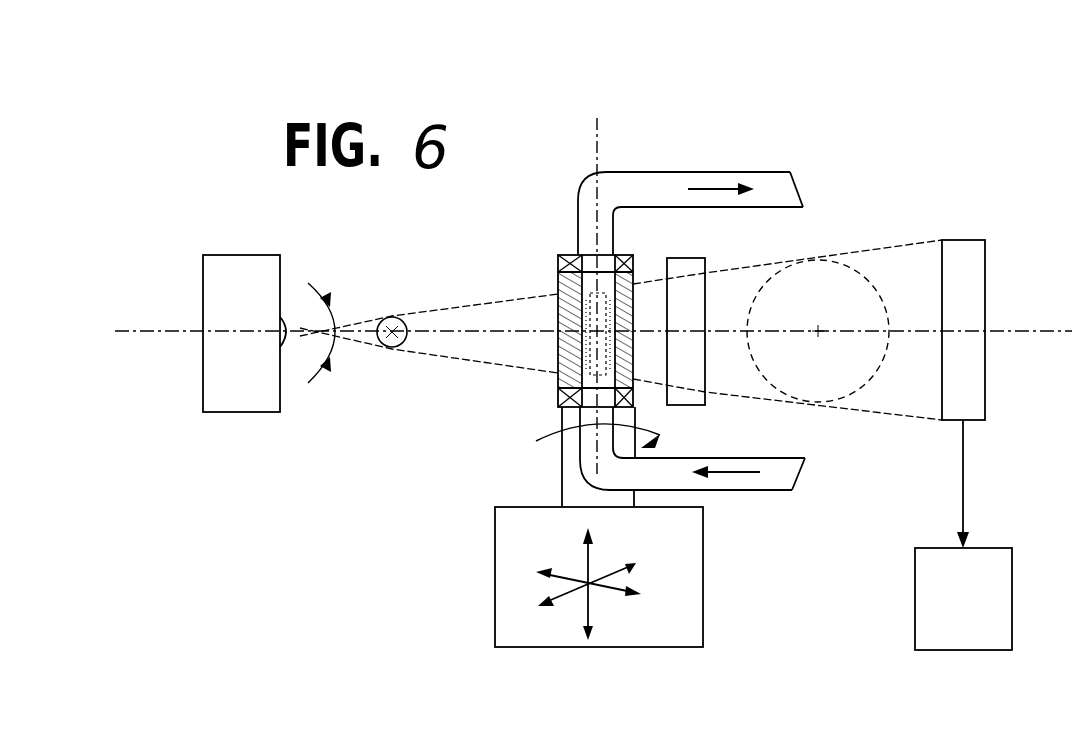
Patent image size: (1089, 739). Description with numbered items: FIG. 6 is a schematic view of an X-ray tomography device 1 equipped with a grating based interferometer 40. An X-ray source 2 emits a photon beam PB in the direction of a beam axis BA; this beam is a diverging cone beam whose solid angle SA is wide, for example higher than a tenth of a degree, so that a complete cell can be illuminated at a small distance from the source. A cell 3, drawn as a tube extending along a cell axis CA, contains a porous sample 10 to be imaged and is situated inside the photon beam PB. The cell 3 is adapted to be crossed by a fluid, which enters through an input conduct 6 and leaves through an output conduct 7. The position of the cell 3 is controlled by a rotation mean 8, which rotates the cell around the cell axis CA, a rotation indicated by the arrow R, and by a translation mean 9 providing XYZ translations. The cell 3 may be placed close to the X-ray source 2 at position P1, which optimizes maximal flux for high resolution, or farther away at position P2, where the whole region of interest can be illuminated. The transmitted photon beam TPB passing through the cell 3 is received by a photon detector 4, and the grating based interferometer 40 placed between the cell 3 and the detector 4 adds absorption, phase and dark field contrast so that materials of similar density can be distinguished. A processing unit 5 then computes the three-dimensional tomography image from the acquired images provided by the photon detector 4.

The X-ray tomography device 1 is at (892, 96).
The X-ray source 2 is at (223, 255).
The cell 3 is at (524, 276).
The photon detector 4 is at (975, 240).
The processing unit 5 is at (1012, 562).
The input conduct 6 is at (762, 490).
The output conduct 7 is at (736, 172).
The rotation mean 8 is at (560, 483).
The translation mean 9 is at (494, 530).
The porous sample 10 is at (612, 307).
The grating based interferometer 40 is at (714, 252).
The cell axis CA is at (594, 134).
The photon beam PB is at (444, 305).
The solid angle SA is at (315, 351).
The position P1 is at (390, 356).
The second point P2 is at (830, 416).
The transmitted photon beam TPB is at (883, 243).
The beam axis BA is at (1038, 328).
The rotation R is at (610, 433).